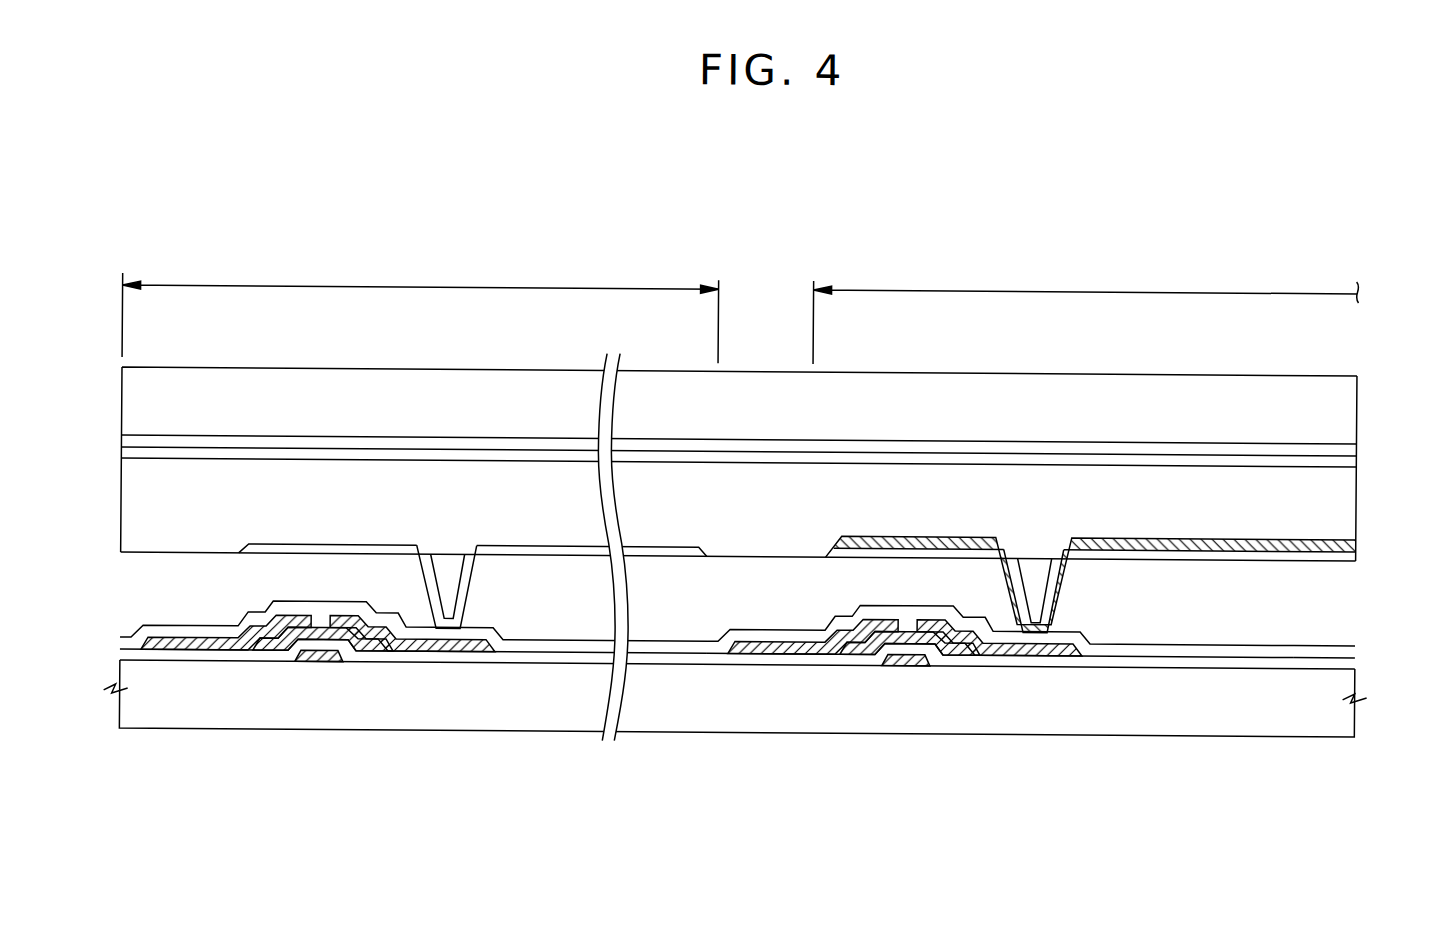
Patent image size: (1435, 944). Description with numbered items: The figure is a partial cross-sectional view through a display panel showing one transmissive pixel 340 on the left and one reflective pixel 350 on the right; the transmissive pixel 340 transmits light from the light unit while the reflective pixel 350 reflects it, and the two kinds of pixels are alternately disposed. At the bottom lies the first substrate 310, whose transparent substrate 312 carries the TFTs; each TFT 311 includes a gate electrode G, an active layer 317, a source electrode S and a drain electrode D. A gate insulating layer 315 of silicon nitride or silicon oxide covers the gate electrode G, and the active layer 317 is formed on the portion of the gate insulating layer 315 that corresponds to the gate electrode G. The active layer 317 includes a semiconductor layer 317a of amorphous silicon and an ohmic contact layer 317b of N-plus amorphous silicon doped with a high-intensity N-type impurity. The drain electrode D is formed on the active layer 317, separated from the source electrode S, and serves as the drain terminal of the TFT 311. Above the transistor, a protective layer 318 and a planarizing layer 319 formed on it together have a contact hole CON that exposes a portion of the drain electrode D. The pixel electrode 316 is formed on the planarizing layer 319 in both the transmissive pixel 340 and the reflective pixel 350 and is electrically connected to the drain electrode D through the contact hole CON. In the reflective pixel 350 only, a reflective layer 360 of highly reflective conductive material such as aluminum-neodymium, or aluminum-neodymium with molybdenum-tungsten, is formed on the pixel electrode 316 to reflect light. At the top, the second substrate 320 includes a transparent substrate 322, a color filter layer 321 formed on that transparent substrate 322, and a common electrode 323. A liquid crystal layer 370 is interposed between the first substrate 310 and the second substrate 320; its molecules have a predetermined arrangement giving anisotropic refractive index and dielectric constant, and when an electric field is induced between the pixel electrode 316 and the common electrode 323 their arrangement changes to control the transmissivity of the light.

The transmissive pixel 340 is at (420, 311).
The reflective pixel 350 is at (1086, 316).
The second substrate 320 is at (1371, 368).
The color filter layer 321 is at (1133, 443).
The transparent substrate 322 is at (1190, 402).
The common electrode 323 is at (1069, 448).
The liquid crystal layer 370 is at (1371, 468).
The first substrate 310 is at (1371, 554).
The TFT 311 is at (317, 745).
The transparent substrate 312 is at (1288, 712).
The gate insulating layer 315 is at (654, 658).
The pixel electrode 316 is at (549, 549).
The active layer 317 is at (355, 729).
The semiconductor layer 317a is at (362, 645).
The ohmic contact layer 317b is at (367, 628).
The protective layer 318 is at (712, 646).
The planarizing layer 319 is at (777, 607).
The reflective layer 360 is at (1203, 537).
The contact hole CON is at (453, 551).
The source electrode S is at (195, 644).
The gate electrode G is at (315, 659).
The drain electrode D is at (412, 703).